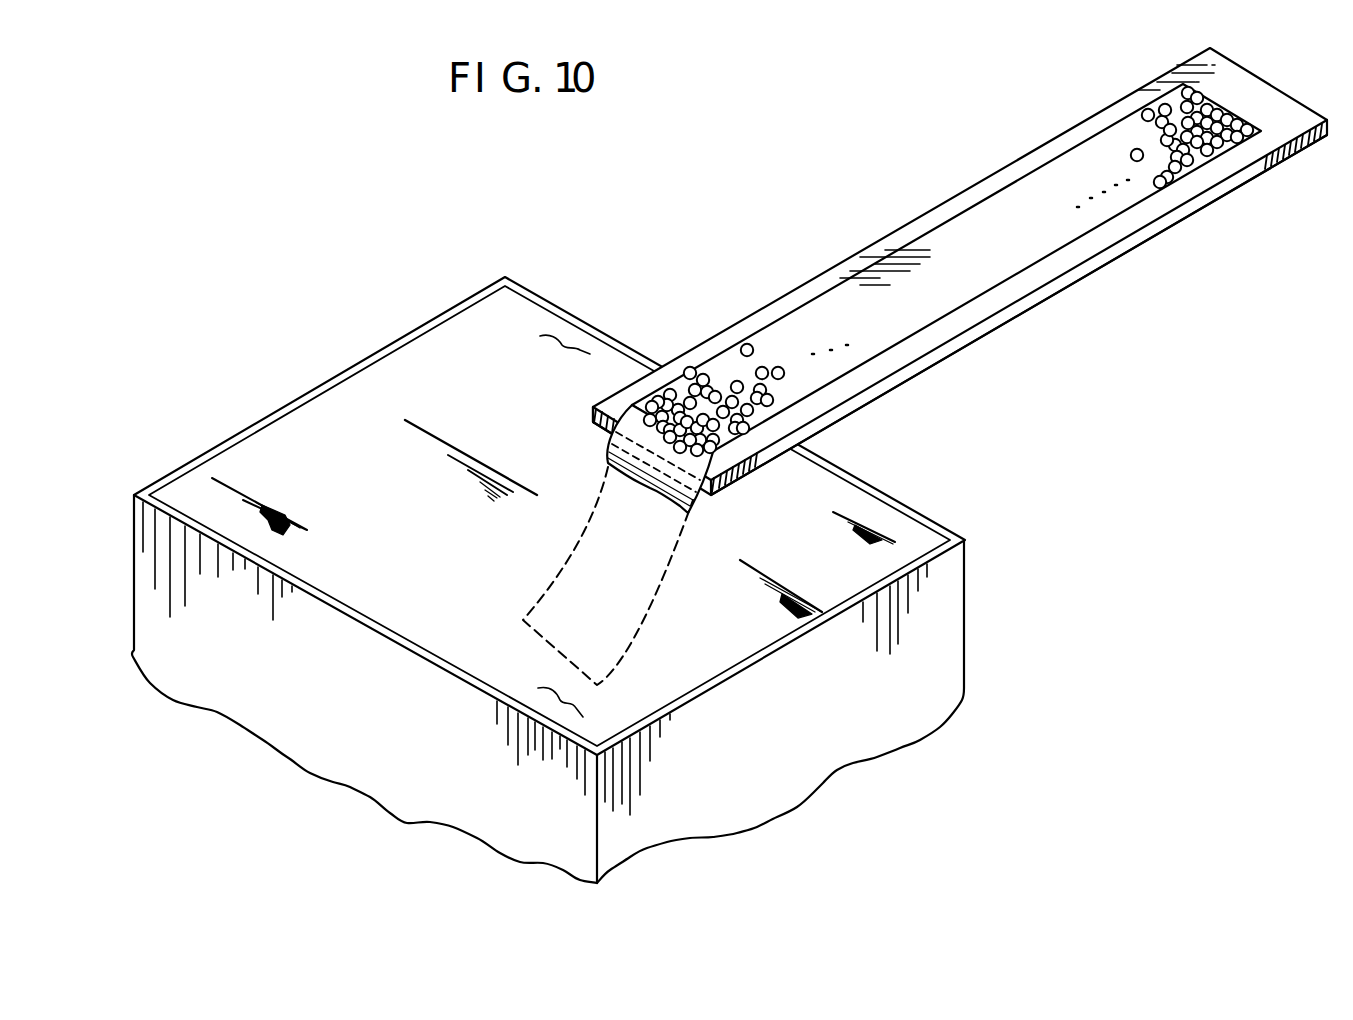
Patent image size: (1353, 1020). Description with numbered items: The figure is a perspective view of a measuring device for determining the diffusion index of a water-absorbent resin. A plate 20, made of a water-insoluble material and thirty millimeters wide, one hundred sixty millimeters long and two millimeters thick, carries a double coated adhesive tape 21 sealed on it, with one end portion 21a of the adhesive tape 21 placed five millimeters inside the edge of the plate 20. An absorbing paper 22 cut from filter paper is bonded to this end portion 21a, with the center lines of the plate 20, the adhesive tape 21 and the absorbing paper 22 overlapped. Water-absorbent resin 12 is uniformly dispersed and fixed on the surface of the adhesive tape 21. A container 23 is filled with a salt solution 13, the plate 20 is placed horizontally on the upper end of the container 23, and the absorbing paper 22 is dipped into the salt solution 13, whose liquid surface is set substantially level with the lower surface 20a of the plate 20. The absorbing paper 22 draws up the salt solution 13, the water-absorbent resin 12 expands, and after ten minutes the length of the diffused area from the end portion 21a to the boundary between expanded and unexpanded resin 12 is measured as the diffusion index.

The water-absorbent resin 12 is at (728, 393).
The salt solution 13 is at (895, 535).
The plate 20 is at (919, 269).
The lower surface of the plate 20a is at (1047, 300).
The adhesive tape 21 is at (1040, 195).
The one end portion of the adhesive tape 21a is at (600, 432).
The absorbing paper 22 is at (690, 497).
The container 23 is at (948, 630).